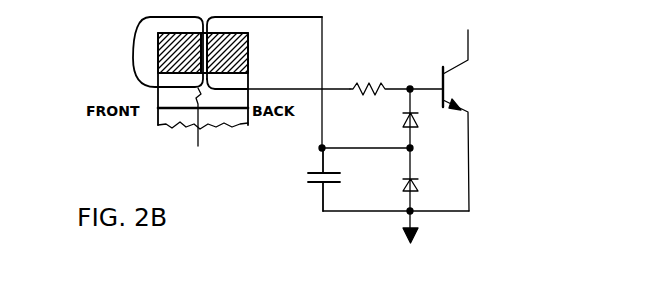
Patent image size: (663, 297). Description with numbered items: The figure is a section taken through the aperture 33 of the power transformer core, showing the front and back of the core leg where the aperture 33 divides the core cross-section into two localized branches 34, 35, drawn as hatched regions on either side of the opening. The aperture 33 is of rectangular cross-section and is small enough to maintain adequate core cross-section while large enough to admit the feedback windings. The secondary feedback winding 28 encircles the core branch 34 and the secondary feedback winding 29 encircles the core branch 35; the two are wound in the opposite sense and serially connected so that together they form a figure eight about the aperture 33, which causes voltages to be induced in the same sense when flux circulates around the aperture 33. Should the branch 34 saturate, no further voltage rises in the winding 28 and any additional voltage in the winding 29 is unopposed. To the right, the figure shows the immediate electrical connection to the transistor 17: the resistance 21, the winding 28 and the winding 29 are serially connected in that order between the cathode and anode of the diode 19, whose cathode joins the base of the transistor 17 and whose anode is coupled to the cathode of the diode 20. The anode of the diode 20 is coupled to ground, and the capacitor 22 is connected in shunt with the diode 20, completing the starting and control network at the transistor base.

The transistor 17 is at (465, 67).
The diode 19 is at (403, 116).
The diode 20 is at (404, 183).
The resistance 21 is at (367, 72).
The capacitor 22 is at (302, 177).
The secondary feedback winding 28 is at (136, 76).
The secondary feedback winding 29 is at (285, 87).
The aperture 33 is at (194, 102).
The core branch 34 is at (158, 53).
The core branch 35 is at (248, 51).